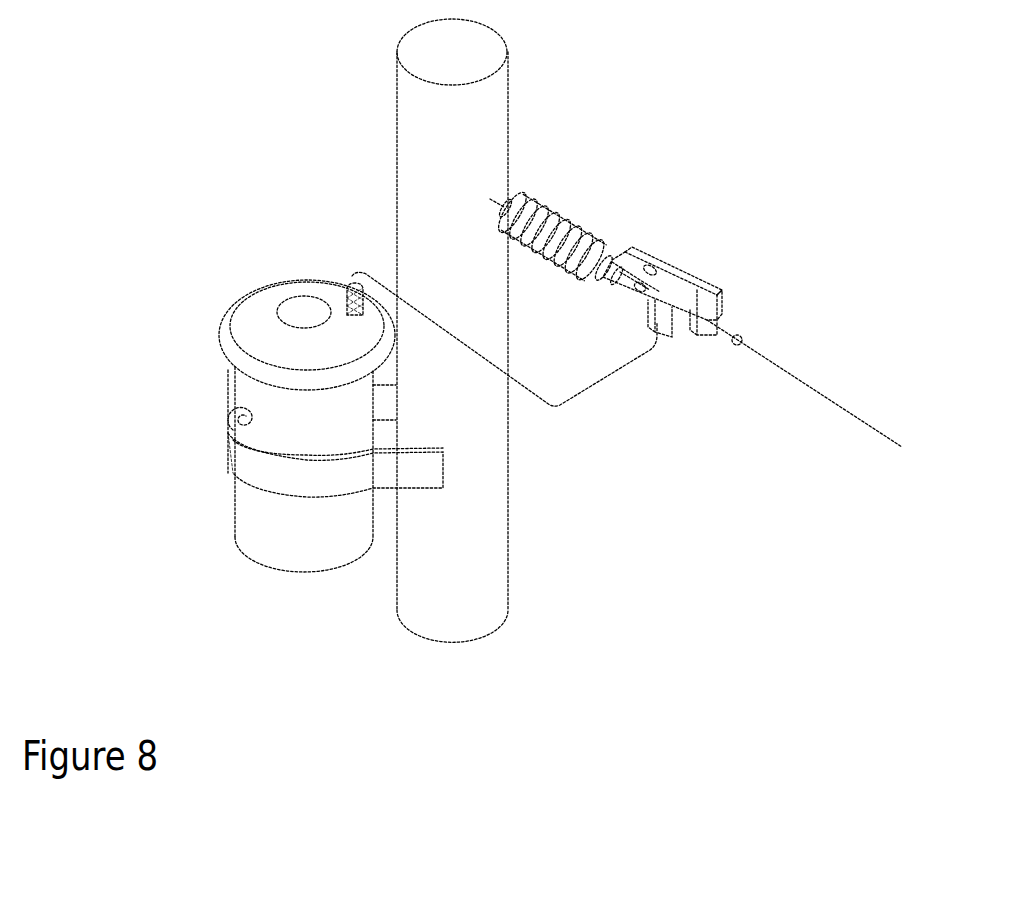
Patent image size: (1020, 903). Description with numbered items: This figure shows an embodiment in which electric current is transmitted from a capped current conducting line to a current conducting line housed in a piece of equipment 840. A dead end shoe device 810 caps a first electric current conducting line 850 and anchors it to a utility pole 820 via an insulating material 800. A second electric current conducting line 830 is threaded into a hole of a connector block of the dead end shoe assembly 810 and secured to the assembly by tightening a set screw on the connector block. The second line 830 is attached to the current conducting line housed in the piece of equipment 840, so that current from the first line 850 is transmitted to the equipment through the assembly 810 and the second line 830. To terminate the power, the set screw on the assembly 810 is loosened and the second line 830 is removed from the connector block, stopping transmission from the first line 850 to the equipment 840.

The insulating material 800 is at (593, 230).
The dead end shoe device 810 is at (722, 268).
The utility pole 820 is at (426, 138).
The second electric current conducting line 830 is at (588, 390).
The piece of equipment 840 is at (223, 573).
The first electric current conducting line 850 is at (805, 380).